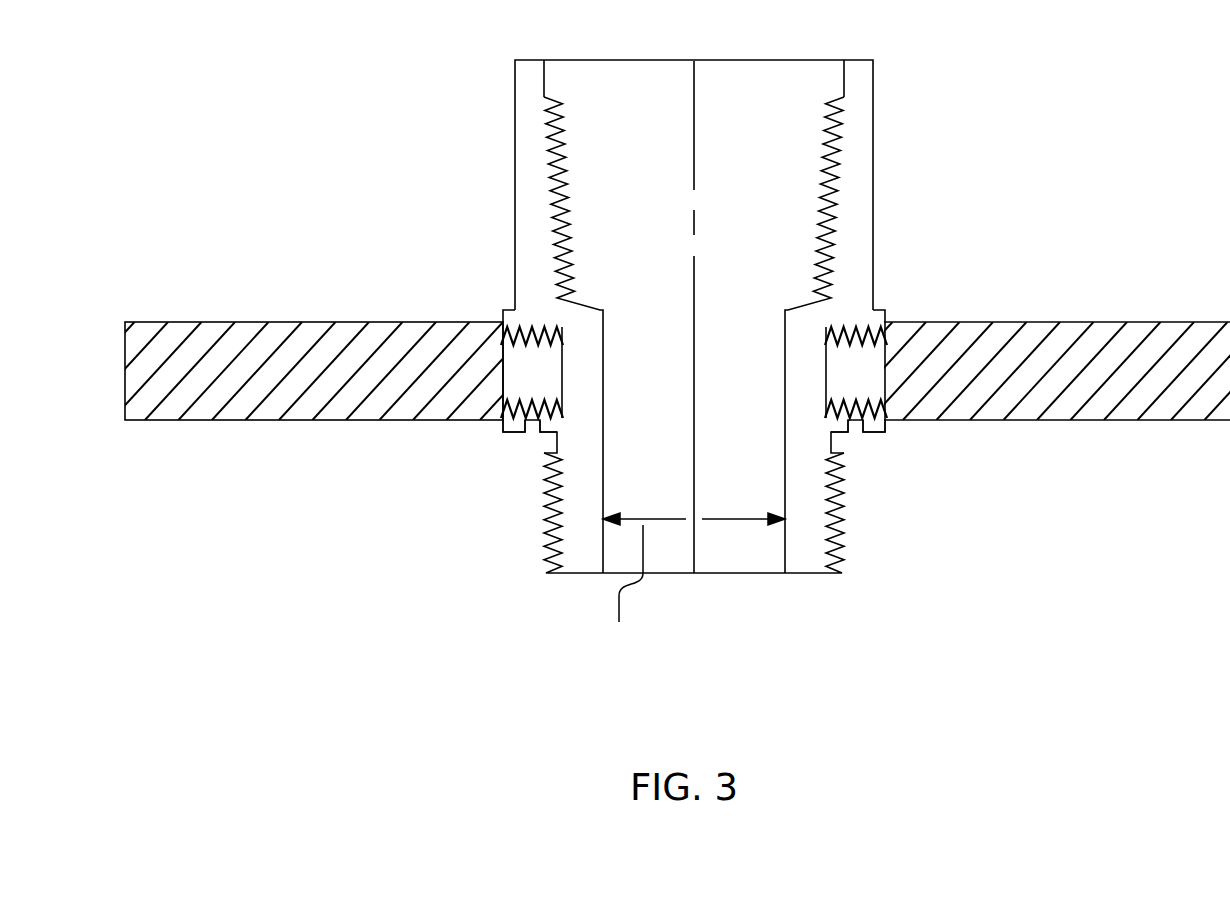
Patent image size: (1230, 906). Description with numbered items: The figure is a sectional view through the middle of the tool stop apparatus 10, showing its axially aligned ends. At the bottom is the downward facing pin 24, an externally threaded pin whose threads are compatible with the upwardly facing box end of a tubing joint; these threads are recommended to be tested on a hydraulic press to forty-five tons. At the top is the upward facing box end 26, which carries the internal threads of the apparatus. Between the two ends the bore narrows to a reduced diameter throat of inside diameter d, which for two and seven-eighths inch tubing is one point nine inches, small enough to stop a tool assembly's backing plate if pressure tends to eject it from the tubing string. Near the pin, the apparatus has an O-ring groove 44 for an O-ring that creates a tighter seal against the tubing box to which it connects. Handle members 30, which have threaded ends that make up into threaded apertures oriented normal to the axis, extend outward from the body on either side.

The tool stop apparatus 10 is at (778, 353).
The downward facing pin 24 is at (845, 525).
The upward facing box end 26 is at (862, 235).
The handle member 30 is at (228, 430).
The O-ring groove 44 is at (533, 432).